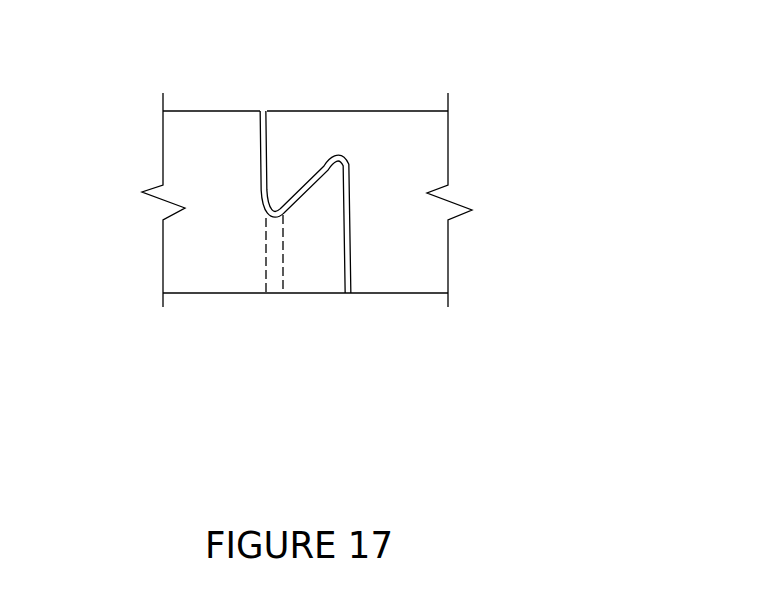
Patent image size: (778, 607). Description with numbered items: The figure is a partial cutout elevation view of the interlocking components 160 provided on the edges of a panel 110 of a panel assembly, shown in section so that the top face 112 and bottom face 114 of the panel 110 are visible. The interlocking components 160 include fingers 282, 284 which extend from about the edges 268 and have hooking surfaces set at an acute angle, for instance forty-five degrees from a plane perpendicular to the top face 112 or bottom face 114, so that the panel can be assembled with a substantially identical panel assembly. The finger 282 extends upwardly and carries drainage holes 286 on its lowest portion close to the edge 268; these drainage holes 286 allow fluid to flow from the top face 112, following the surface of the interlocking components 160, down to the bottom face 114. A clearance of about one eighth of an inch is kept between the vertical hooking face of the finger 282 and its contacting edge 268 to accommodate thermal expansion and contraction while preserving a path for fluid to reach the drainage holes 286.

The panel 110 is at (182, 238).
The top face 112 is at (311, 60).
The bottom face 114 is at (301, 348).
The interlocking components 160 is at (386, 223).
The edge 268 is at (227, 111).
The finger 282 is at (313, 293).
The finger 284 is at (315, 111).
The drainage holes 286 is at (273, 293).